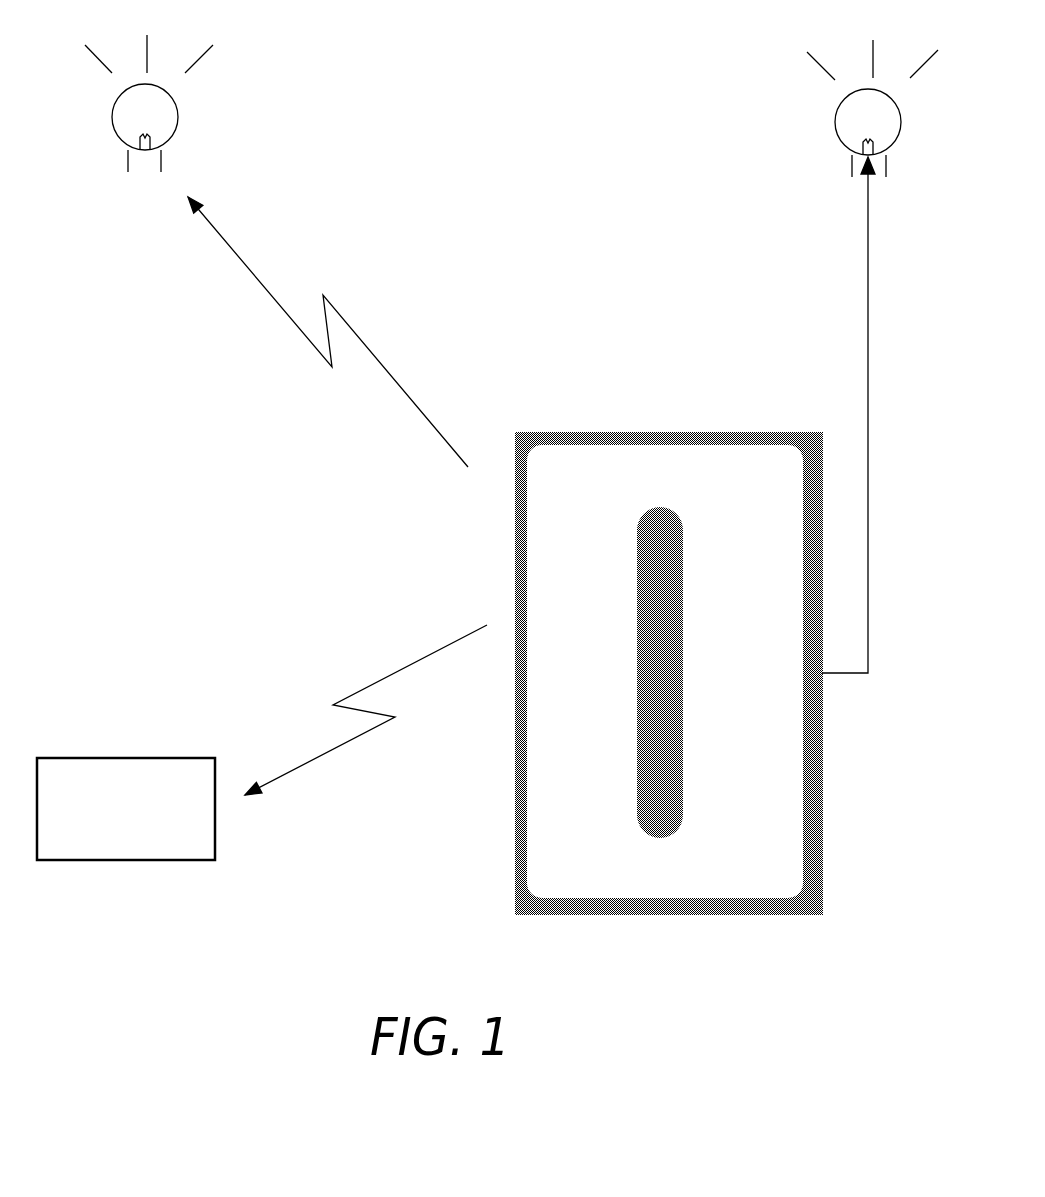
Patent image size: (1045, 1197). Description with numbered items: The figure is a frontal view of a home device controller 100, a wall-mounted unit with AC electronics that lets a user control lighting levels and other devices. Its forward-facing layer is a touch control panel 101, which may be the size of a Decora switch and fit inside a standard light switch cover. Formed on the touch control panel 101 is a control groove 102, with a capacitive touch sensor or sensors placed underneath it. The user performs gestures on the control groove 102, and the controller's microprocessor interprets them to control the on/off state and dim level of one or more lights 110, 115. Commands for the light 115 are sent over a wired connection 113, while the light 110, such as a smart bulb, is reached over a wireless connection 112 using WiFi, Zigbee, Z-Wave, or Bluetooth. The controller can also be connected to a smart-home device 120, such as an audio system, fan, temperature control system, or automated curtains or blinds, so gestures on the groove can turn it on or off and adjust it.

The home device controller 100 is at (626, 624).
The touch control panel 101 is at (615, 671).
The control groove 102 is at (637, 769).
The light 110 is at (97, 166).
The wireless connection 112 is at (328, 332).
The wired connection 113 is at (871, 415).
The light 115 is at (832, 166).
The smart-home device 120 is at (107, 850).